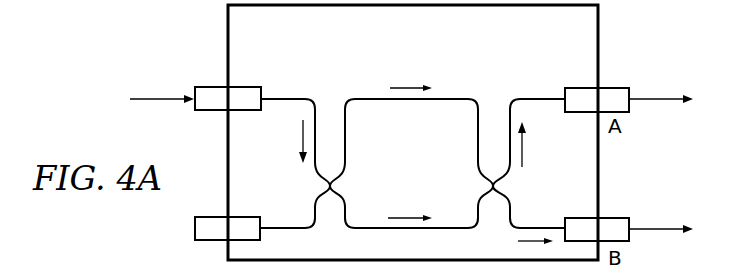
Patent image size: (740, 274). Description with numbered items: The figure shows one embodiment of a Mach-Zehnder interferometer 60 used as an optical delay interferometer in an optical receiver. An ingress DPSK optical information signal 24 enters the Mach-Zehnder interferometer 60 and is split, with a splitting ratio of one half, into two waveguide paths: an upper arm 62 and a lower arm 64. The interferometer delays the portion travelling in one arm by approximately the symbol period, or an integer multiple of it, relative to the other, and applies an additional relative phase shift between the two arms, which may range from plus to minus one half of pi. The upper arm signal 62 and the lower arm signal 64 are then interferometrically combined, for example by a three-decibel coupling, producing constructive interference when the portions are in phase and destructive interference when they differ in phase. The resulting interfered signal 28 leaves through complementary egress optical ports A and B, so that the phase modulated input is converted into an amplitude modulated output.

The optical information signal 24 is at (163, 97).
The Mach-Zehnder interferometer 60 is at (608, 52).
The upper arm 62 is at (380, 98).
The lower arm 64 is at (370, 227).
The interfered signal 28 is at (653, 102).